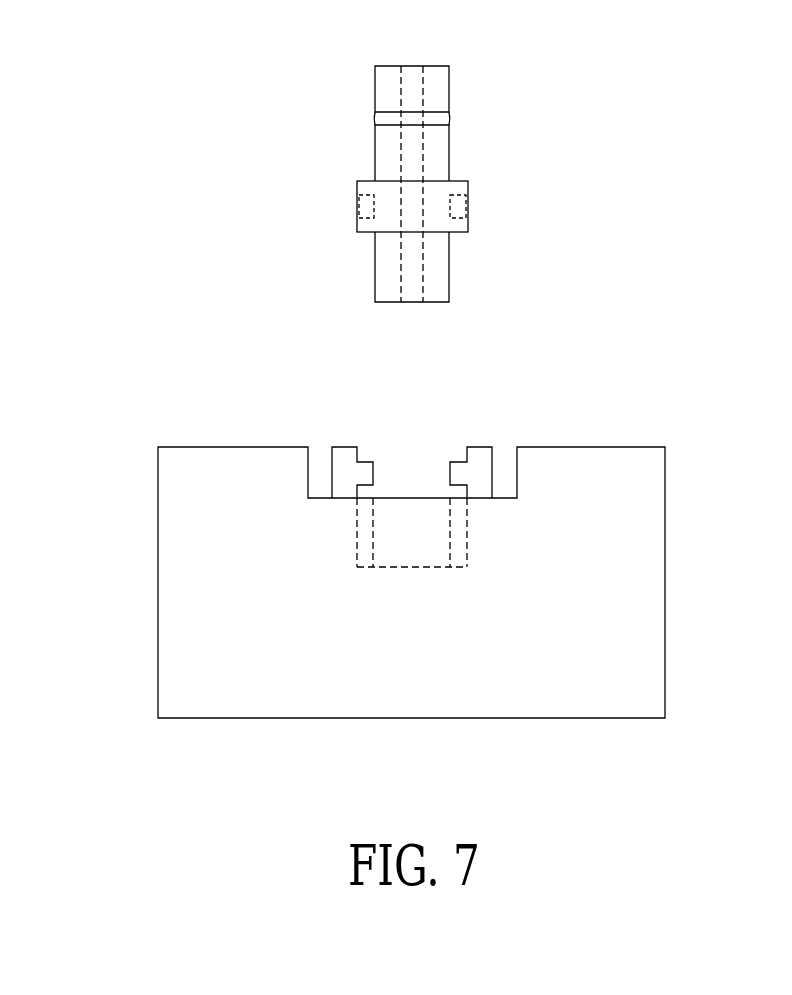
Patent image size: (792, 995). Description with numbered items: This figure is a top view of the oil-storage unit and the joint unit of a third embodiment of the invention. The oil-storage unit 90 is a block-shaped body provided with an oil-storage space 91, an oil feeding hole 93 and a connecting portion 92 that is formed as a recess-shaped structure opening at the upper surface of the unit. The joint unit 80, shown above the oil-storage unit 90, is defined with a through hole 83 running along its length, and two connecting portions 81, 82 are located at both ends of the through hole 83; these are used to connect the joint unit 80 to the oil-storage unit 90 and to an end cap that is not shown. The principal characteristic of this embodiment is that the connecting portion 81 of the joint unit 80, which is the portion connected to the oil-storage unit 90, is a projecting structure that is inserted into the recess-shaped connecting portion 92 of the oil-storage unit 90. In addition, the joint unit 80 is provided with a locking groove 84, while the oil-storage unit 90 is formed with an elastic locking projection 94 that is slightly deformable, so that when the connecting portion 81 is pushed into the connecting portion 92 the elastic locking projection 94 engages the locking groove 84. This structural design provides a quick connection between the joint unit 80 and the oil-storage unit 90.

The joint unit 80 is at (406, 154).
The connecting portion 81 is at (375, 277).
The connecting portion 82 is at (450, 155).
The through hole 83 is at (413, 280).
The locking groove 84 is at (363, 205).
The oil-storage unit 90 is at (430, 536).
The oil-storage space 91 is at (238, 512).
The connecting portion 92 is at (467, 543).
The oil feeding hole 93 is at (408, 552).
The elastic locking projection 94 is at (363, 468).